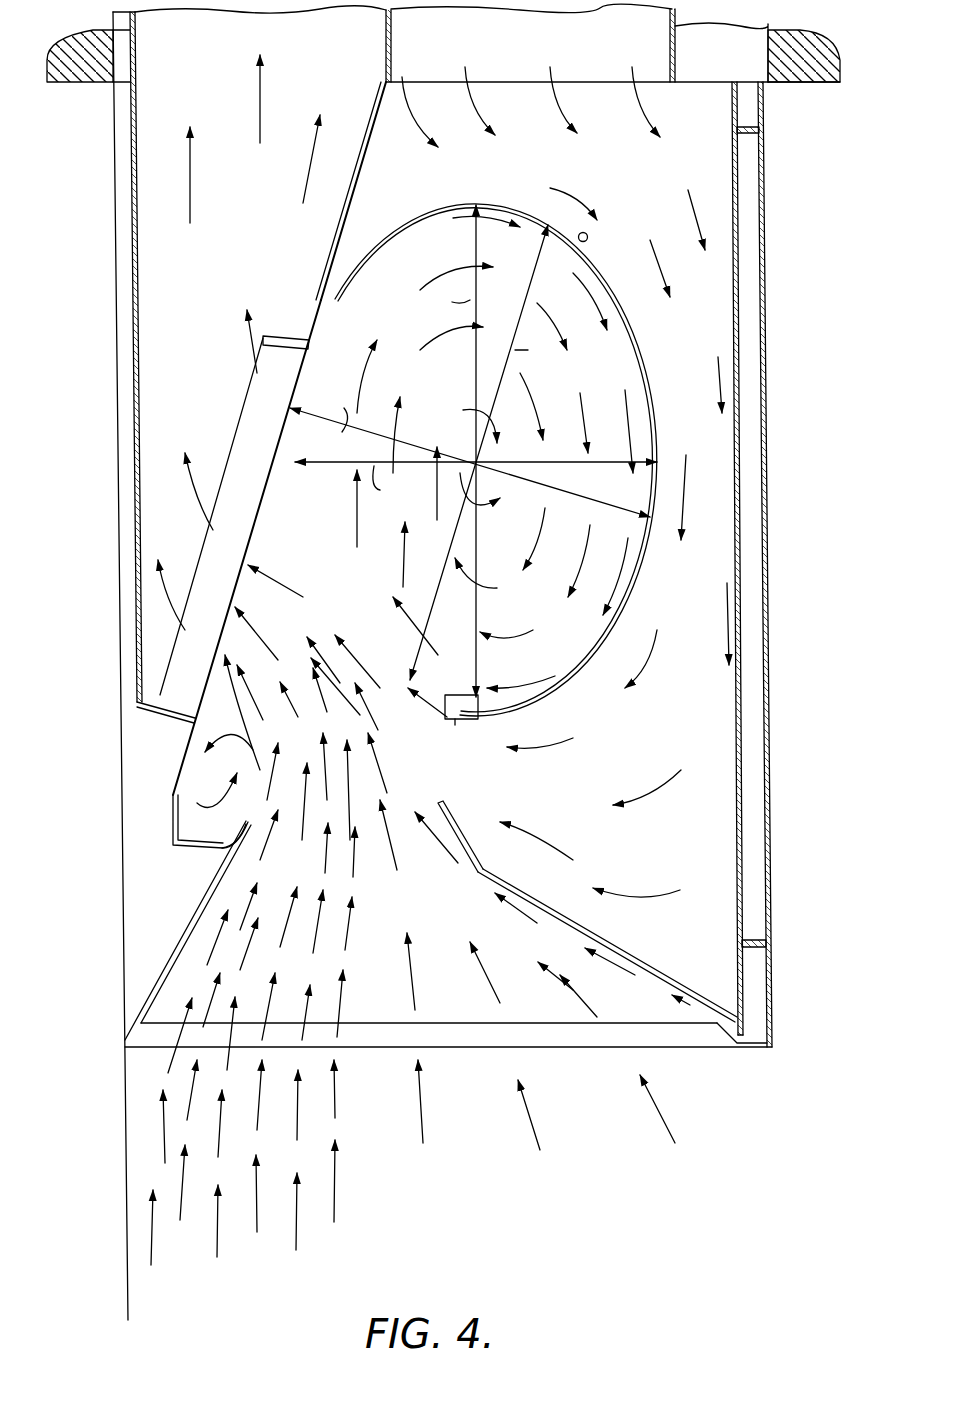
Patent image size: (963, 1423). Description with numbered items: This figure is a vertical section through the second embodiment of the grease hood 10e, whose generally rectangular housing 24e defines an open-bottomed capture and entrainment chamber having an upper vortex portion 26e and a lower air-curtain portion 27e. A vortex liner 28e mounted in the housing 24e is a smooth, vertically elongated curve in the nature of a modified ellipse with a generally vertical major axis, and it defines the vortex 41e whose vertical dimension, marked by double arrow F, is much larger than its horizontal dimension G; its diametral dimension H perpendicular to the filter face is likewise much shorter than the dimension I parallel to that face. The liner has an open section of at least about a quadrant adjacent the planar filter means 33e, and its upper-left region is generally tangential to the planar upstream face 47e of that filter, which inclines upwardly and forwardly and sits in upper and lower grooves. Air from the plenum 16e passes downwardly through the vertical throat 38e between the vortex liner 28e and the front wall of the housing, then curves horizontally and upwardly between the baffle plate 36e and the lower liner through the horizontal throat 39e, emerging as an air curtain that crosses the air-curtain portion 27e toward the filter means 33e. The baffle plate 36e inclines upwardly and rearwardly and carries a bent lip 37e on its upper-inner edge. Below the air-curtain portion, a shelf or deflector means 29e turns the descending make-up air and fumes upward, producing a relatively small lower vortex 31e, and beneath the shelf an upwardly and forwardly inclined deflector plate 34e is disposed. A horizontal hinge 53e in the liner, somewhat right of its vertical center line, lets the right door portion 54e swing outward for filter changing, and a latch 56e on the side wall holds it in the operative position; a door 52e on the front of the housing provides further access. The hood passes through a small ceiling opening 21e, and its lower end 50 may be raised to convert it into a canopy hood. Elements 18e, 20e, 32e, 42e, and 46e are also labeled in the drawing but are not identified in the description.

The grease hood 10e is at (806, 262).
The plenum 16e is at (580, 48).
The sash chamber 18e is at (238, 53).
The divider 20e is at (392, 45).
The ceiling opening 21e is at (115, 80).
The housing 24e is at (118, 528).
The vortex portion 26e is at (466, 389).
The air-curtain portion 27e is at (398, 723).
The vortex liner 28e is at (478, 200).
The shelf or deflector means 29e is at (230, 848).
The lower vortex 31e is at (212, 777).
The inclined wall 32e is at (345, 235).
The filter means 33e is at (248, 410).
The deflector plate 34e is at (178, 952).
The baffle plate 36e is at (568, 930).
The bent lip 37e is at (458, 848).
The vertical throat 38e is at (707, 455).
The horizontal throat 39e is at (547, 809).
The vortex 41e is at (540, 458).
The bottom corner member 42e is at (735, 1028).
The support block 46e is at (480, 718).
The forward face of filter means 47e is at (265, 497).
The lower end 50 is at (765, 1042).
The door 52e is at (768, 572).
The horizontal hinge 53e is at (590, 236).
The door portion of vortex liner 54e is at (652, 593).
The latch 56e is at (458, 722).